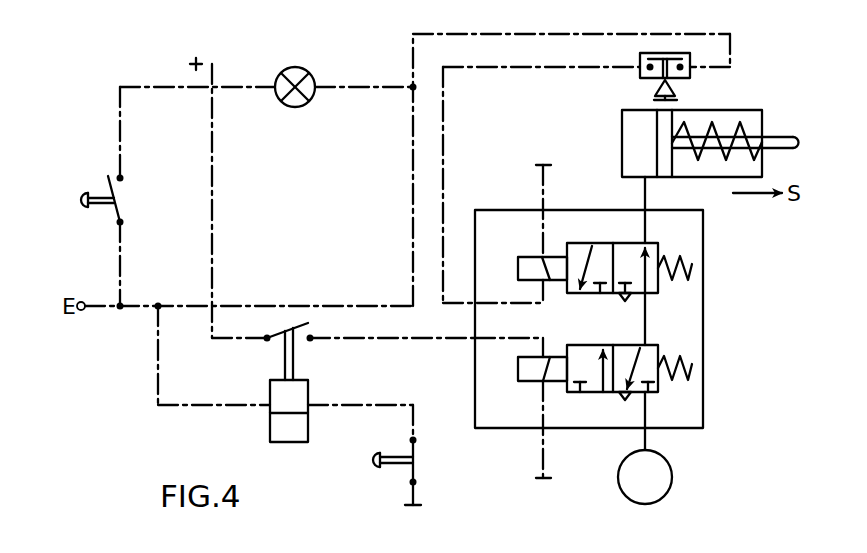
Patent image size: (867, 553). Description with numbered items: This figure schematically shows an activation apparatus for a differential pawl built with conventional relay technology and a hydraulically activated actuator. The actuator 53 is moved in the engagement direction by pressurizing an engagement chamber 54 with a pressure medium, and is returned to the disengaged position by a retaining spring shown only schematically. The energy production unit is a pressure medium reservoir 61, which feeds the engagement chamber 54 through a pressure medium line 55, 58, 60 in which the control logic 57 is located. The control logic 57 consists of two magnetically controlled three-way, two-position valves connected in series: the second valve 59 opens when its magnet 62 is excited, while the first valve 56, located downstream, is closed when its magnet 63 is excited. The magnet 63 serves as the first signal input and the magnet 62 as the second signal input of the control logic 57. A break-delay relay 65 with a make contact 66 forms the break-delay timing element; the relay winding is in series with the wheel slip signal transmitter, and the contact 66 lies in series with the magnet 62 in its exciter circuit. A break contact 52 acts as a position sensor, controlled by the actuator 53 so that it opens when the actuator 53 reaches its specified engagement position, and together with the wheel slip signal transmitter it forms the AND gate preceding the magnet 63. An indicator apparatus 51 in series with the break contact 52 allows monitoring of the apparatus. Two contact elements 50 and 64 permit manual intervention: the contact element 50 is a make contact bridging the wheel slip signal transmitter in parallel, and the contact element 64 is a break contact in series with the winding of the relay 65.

The contact element 50 is at (100, 198).
The indicator apparatus 51 is at (284, 69).
The break contact 52 is at (686, 88).
The actuator 53 is at (769, 119).
The engagement chamber 54 is at (637, 126).
The pressure medium line 55 is at (645, 193).
The first 3/2-way valve 56 is at (600, 240).
The control logic 57 is at (709, 320).
The pressure medium line 58 is at (647, 318).
The second 3/2-way valve 59 is at (598, 341).
The pressure medium line 60 is at (647, 441).
The pressure medium reservoir 61 is at (659, 485).
The magnet 62 is at (525, 378).
The magnet 63 is at (525, 261).
The contact element 64 is at (393, 470).
The break-delay relay 65 is at (268, 434).
The make contact 66 is at (283, 360).